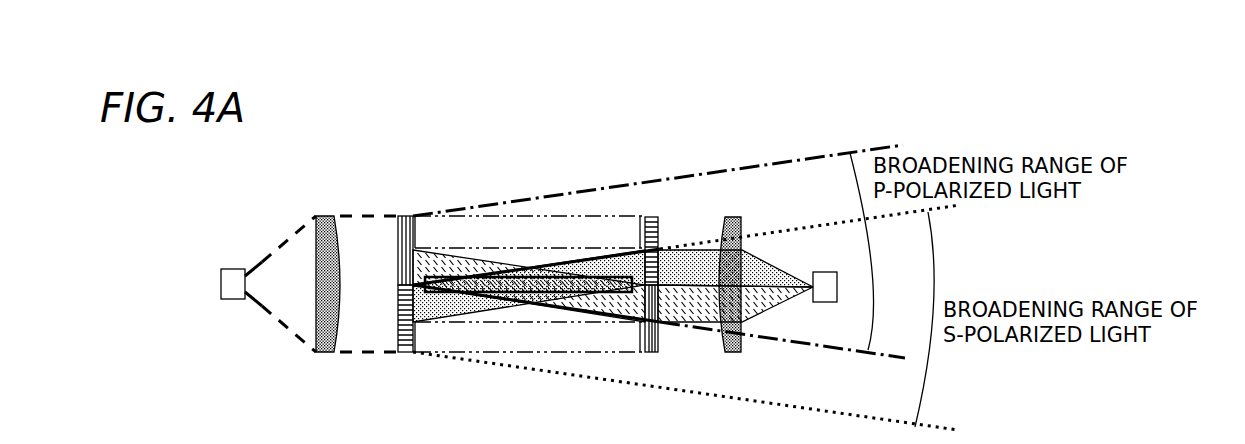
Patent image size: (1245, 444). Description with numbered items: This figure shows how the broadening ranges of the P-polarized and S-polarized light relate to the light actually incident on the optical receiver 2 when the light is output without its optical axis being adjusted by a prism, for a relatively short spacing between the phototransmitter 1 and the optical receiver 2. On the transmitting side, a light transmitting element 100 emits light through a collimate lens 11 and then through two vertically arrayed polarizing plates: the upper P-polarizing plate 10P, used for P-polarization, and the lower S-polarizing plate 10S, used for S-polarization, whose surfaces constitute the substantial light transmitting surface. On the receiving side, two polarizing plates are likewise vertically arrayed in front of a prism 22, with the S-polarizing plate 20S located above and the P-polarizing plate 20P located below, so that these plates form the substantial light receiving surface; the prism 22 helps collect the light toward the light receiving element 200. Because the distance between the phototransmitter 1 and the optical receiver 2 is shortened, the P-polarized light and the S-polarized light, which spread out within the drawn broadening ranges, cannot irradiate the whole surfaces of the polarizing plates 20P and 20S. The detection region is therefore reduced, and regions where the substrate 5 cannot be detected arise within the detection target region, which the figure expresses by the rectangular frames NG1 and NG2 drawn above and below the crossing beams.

The phototransmitter 1 is at (297, 193).
The light transmitting element 100 is at (233, 270).
The collimate lens 11 is at (322, 216).
The P-polarizing plate 10P is at (408, 215).
The S-polarizing plate 10S is at (408, 353).
The rectangular frame NG1 is at (508, 215).
The rectangular frame NG2 is at (508, 353).
The substrate 5 is at (555, 297).
The S-polarizing plate 20S is at (655, 217).
The P-polarizing plate 20P is at (655, 353).
The prism 22 is at (740, 217).
The light receiving element 200 is at (837, 288).
The optical receiver 2 is at (792, 220).